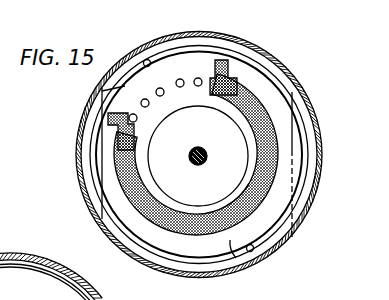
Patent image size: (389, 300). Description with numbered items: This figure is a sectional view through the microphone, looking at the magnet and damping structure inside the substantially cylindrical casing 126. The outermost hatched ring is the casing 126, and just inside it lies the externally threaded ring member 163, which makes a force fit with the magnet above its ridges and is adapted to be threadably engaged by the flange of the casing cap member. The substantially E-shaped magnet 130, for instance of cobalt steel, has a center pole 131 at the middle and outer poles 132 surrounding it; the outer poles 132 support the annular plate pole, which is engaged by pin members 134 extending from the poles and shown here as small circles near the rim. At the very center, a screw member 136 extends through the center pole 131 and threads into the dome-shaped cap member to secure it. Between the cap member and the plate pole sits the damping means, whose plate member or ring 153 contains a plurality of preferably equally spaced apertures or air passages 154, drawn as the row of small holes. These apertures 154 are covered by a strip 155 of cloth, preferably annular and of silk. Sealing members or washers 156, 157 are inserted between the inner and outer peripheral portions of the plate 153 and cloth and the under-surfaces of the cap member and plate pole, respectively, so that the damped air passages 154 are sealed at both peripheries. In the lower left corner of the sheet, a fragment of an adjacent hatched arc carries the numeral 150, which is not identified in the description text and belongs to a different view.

The casing 126 is at (308, 102).
The E-shaped magnet 130 is at (293, 117).
The center pole 131 is at (200, 218).
The outer poles 132 is at (272, 83).
The pin members 134 is at (147, 59).
The screw member 136 is at (193, 164).
The housing 150 is at (3, 297).
The plate member 153 is at (103, 91).
The apertures 154 is at (180, 87).
The strip of cloth 155 is at (228, 64).
The sealing member 156 is at (245, 200).
The sealing member 157 is at (233, 247).
The externally threaded ring member 163 is at (88, 122).